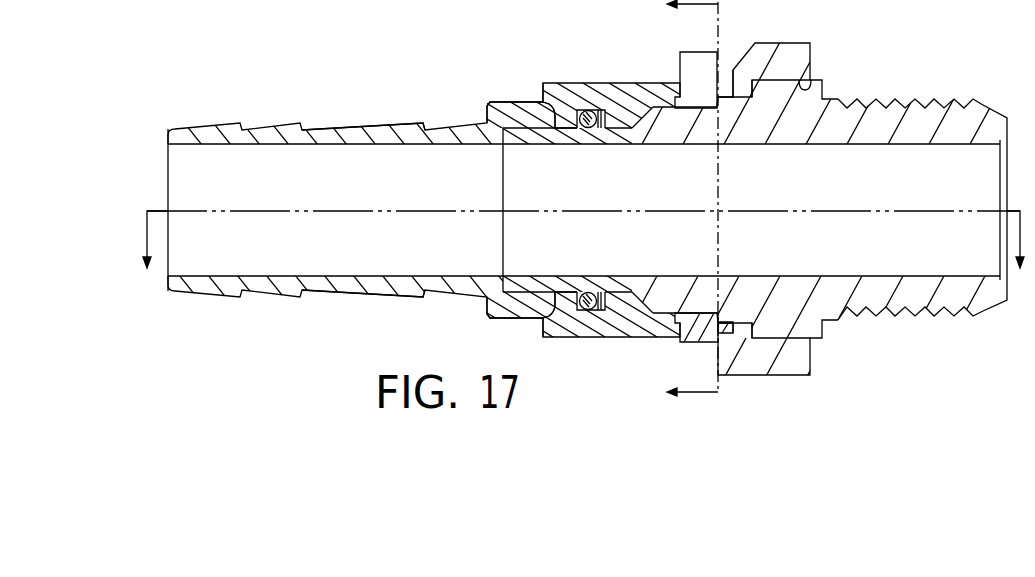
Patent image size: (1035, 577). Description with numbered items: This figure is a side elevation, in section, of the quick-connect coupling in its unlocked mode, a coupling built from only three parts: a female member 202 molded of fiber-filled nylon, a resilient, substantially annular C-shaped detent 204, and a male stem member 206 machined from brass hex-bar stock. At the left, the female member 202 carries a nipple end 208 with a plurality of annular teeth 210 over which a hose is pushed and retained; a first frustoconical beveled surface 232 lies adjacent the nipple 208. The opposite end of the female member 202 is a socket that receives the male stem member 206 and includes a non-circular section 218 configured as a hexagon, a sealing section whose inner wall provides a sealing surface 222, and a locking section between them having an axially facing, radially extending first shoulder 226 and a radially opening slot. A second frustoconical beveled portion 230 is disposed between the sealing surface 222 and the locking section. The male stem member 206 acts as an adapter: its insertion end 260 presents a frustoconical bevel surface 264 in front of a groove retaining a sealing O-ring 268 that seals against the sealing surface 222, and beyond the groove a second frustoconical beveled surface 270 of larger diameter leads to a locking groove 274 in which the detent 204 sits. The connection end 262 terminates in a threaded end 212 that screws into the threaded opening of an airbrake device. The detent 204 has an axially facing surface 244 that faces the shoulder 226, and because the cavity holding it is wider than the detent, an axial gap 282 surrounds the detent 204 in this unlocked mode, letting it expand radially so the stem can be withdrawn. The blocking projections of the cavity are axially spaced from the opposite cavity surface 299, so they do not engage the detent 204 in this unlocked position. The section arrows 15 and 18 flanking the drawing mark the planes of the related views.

The section line 15- 15 is at (584, 258).
The section line 18- 18 is at (678, 204).
The female member 202 is at (639, 77).
The substantially annular detent 204 is at (706, 58).
The male stem member 206 is at (881, 91).
The nipple end 208 is at (326, 128).
The annular teeth 210 is at (362, 127).
The threaded end 212 is at (965, 100).
The non-circular section 218 is at (813, 82).
The sealing surface 222 is at (603, 125).
The first shoulder 226 is at (735, 66).
The second frustoconical beveled portion 230 is at (647, 110).
The first frustoconical beveled surface 232 is at (558, 136).
The axially facing surface 244 is at (738, 100).
The insertion end 260 is at (547, 133).
The connection end 262 is at (955, 135).
The frustoconical bevel surface 264 is at (553, 107).
The sealing O-ring 268 is at (591, 123).
The second frustoconical beveled surface 270 is at (657, 125).
The locking groove 274 is at (735, 125).
The axial gap 282 is at (803, 130).
The opposite surface 299 is at (680, 86).